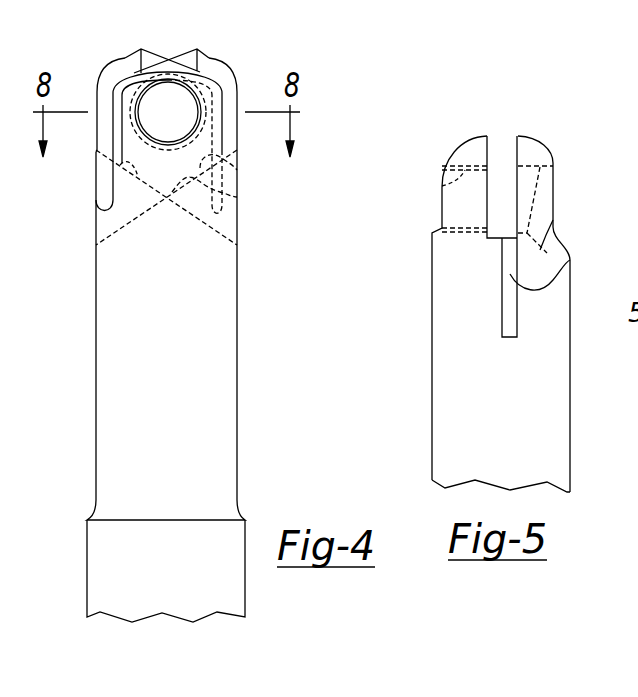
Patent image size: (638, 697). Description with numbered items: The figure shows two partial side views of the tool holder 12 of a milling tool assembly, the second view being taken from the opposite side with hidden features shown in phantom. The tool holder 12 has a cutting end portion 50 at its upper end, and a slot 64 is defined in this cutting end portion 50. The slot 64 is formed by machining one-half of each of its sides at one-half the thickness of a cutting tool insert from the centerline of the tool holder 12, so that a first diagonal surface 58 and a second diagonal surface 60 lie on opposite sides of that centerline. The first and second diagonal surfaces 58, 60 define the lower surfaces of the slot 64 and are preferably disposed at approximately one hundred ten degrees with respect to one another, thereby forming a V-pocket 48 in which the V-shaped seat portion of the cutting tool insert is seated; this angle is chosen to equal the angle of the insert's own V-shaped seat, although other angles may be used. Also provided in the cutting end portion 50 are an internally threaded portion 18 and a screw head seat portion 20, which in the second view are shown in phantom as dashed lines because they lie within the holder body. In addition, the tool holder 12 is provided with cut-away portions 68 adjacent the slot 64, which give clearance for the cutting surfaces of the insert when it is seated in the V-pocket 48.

In FIG. 4, the tool holder 12 is at (212, 462).
In FIG. 5, the tool holder 12 is at (518, 440).
In FIG. 4, the internally threaded portion 18 is at (193, 96).
In FIG. 5, the internally threaded portion 18 is at (442, 185).
In FIG. 5, the screw head seat portion 20 is at (558, 170).
In FIG. 4, the V-pocket 48 is at (237, 197).
In FIG. 4, the cutting end portion 50 is at (227, 223).
In FIG. 5, the cutting end portion 50 is at (447, 285).
In FIG. 4, the first diagonal surface 58 is at (120, 165).
In FIG. 5, the first diagonal surface 58 is at (570, 260).
In FIG. 4, the second diagonal surface 60 is at (237, 170).
In FIG. 5, the slot 64 is at (517, 148).
In FIG. 4, the cut-away portions 68 is at (140, 50).
In FIG. 5, the cut-away portions 68 is at (553, 220).